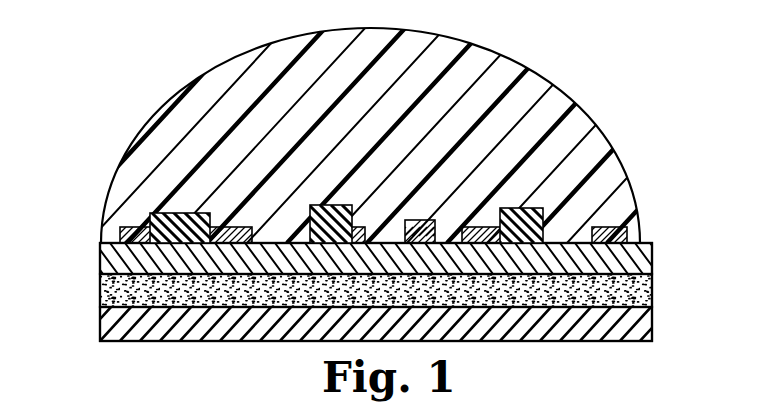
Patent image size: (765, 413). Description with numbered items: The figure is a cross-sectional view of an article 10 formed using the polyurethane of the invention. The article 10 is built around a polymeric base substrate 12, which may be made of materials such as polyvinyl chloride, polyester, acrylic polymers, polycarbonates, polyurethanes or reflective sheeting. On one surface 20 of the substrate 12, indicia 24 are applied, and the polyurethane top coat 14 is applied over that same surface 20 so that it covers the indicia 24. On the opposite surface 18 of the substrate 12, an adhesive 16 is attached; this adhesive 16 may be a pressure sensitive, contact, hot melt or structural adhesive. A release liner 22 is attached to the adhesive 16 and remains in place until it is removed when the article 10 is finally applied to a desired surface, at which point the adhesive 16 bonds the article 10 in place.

The article 10 is at (109, 178).
The polymeric base substrate 12 is at (630, 262).
The polyurethane top coat 14 is at (520, 97).
The adhesive 16 is at (381, 317).
The surface 18 is at (613, 273).
The surface 20 is at (108, 238).
The release liner 22 is at (166, 325).
The indicia 24 is at (187, 230).